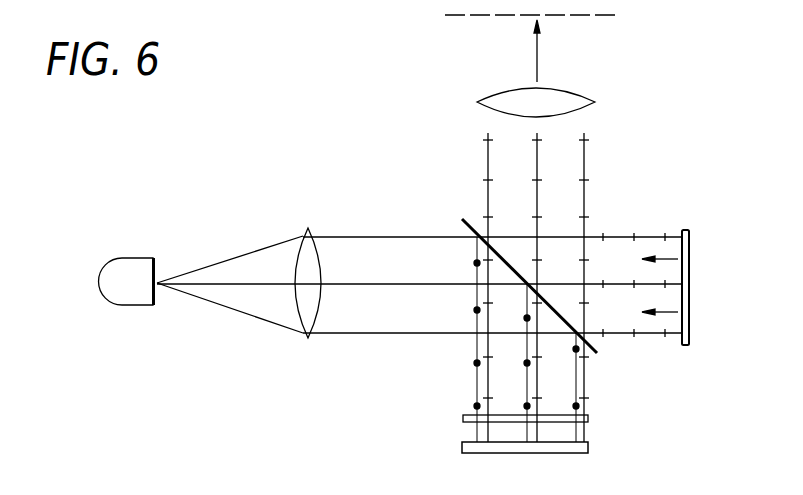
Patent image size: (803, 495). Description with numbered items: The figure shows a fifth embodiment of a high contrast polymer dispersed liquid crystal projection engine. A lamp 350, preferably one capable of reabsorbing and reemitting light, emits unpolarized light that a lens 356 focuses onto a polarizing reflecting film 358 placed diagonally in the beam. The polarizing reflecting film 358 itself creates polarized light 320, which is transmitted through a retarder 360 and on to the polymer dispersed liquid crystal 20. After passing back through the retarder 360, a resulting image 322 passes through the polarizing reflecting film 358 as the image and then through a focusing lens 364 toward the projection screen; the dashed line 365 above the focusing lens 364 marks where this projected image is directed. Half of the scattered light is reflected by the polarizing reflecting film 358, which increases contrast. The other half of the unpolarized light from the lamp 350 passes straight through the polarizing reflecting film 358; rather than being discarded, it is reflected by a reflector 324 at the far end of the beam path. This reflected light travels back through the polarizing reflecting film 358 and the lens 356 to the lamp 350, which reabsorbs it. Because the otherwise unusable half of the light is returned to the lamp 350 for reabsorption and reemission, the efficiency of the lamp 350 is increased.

The polymer dispersed liquid crystal 20 is at (588, 450).
The polarized light 320 is at (477, 379).
The resulting image 322 is at (585, 377).
The reflector 324 is at (681, 230).
The lamp 350 is at (138, 310).
The lens 356 is at (313, 232).
The polarizing reflecting film 358 is at (467, 220).
The retarder 360 is at (588, 418).
The focusing lens 364 is at (590, 104).
The image plane / detector 365 is at (607, 16).